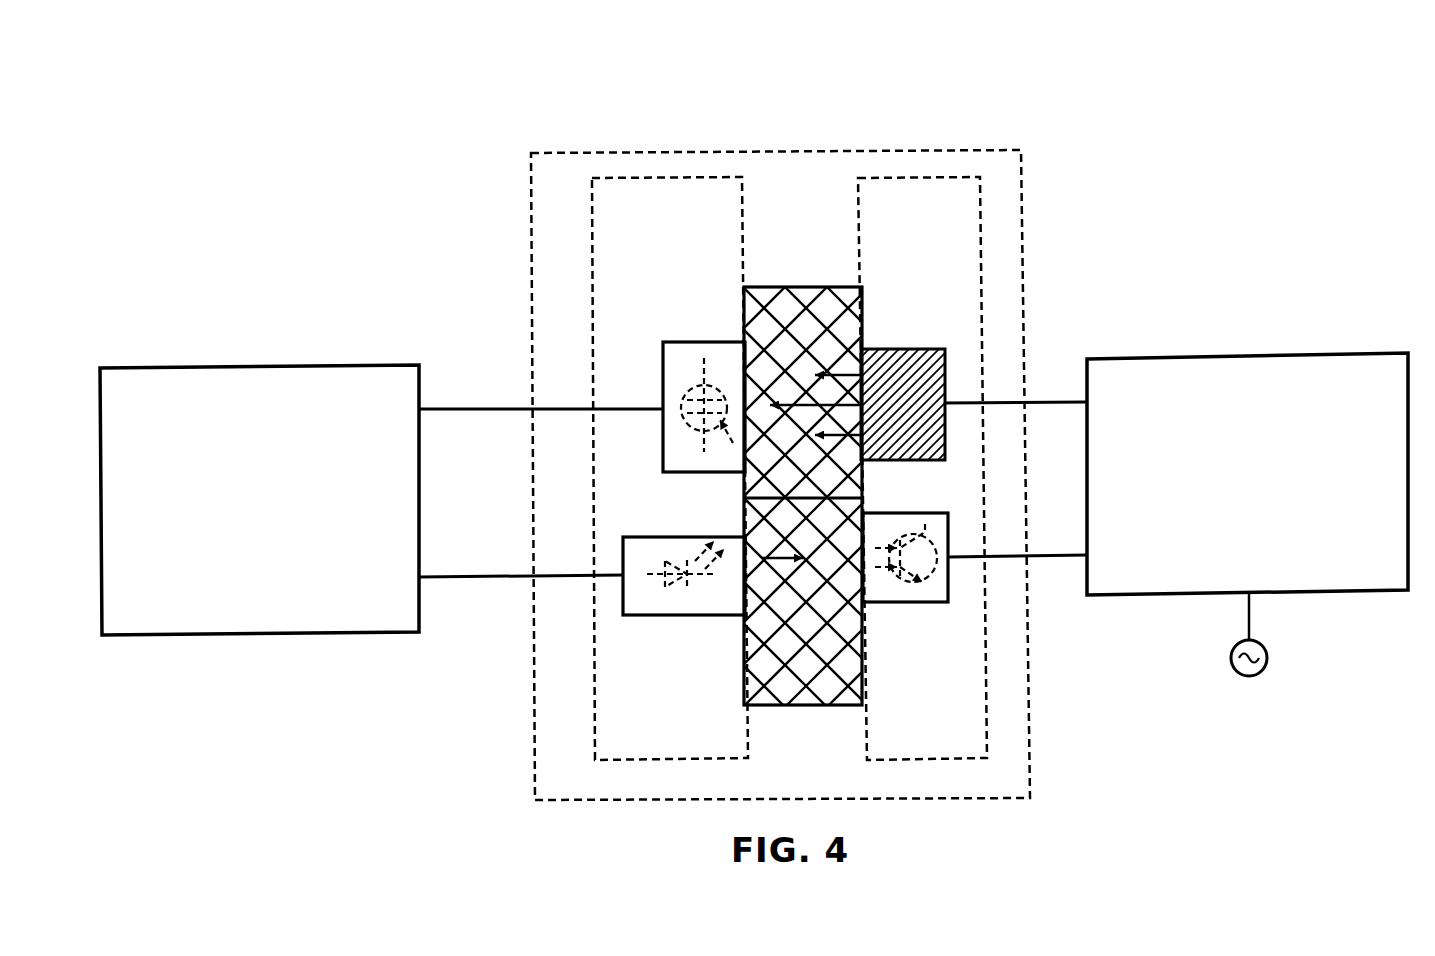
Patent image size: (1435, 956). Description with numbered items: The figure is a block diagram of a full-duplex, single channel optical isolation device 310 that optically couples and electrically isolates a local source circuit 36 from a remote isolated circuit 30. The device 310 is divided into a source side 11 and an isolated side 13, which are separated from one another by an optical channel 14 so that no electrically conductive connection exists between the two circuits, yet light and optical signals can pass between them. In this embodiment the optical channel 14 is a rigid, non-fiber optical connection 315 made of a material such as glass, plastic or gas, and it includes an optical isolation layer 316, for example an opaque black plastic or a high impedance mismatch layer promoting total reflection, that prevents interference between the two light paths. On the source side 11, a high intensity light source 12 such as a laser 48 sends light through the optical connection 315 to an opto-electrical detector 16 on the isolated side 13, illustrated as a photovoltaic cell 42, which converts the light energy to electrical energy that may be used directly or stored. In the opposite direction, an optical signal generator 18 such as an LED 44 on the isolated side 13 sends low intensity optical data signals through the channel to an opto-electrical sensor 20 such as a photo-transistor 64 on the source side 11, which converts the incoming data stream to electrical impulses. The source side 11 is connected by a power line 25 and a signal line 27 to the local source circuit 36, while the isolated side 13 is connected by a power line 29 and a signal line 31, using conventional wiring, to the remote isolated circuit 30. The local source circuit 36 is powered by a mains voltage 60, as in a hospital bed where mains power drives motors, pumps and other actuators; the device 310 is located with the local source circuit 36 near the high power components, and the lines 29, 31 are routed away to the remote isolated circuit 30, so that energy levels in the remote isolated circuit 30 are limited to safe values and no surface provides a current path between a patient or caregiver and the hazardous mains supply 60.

The source side 11 is at (983, 190).
The light source 12 is at (957, 328).
The isolated side 13 is at (647, 177).
The optical channel 14 is at (794, 262).
The opto-electrical detector 16 is at (640, 257).
The optical signal generator 18 is at (617, 652).
The opto-electrical sensor 20 is at (963, 600).
The power line 25 is at (1048, 400).
The signal line 27 is at (1047, 557).
The power line 29 is at (477, 407).
The remote isolated circuit 30 is at (282, 635).
The signal line 31 is at (478, 578).
The local source circuit 36 is at (1352, 593).
The photovoltaic cell 42 is at (683, 400).
The LED 44 is at (675, 578).
The laser 48 is at (903, 375).
The mains voltage 60 is at (1270, 665).
The photo-transistor 64 is at (900, 590).
The full-duplex, single channel optical isolation device 310 is at (801, 131).
The optical connection 315 is at (850, 287).
The optical isolation layer 316 is at (740, 518).